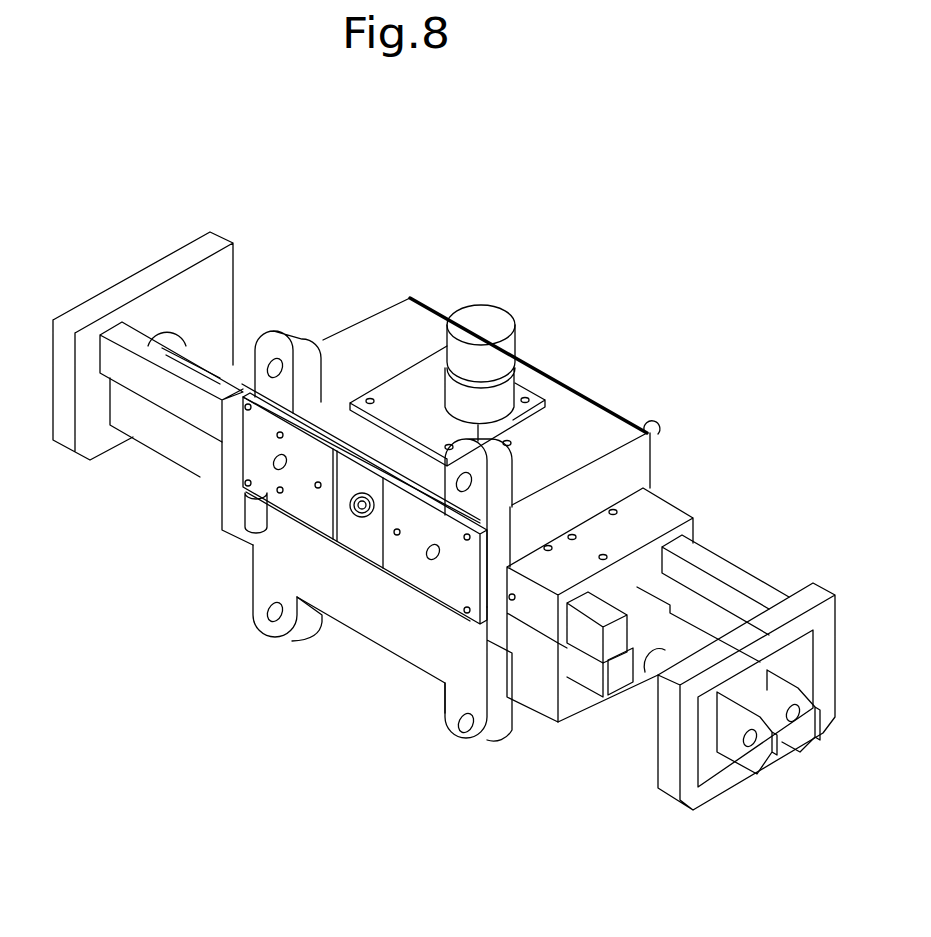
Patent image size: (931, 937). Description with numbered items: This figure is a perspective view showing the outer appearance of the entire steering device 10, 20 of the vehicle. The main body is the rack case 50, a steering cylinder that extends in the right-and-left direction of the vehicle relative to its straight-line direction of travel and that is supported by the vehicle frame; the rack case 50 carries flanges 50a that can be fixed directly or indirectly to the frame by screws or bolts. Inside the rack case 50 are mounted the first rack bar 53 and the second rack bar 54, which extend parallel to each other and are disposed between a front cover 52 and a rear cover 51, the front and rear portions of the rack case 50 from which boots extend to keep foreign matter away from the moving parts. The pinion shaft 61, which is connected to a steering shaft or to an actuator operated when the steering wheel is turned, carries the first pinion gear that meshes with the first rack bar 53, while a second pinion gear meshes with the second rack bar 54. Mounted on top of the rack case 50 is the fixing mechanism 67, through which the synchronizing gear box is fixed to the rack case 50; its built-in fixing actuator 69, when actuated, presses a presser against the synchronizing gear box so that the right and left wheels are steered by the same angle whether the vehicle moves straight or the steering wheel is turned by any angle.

The steering device 10 is at (443, 496).
The steering device 20 is at (443, 496).
The rack case 50 is at (350, 680).
The flanges 50a is at (277, 366).
The rear cover 51 is at (578, 408).
The front cover 52 is at (432, 655).
The first rack bar 53 is at (722, 582).
The second rack bar 54 is at (162, 395).
The pinion shaft 61 is at (600, 458).
The fixing mechanism 67 is at (516, 284).
The fixing actuator 69 is at (470, 323).